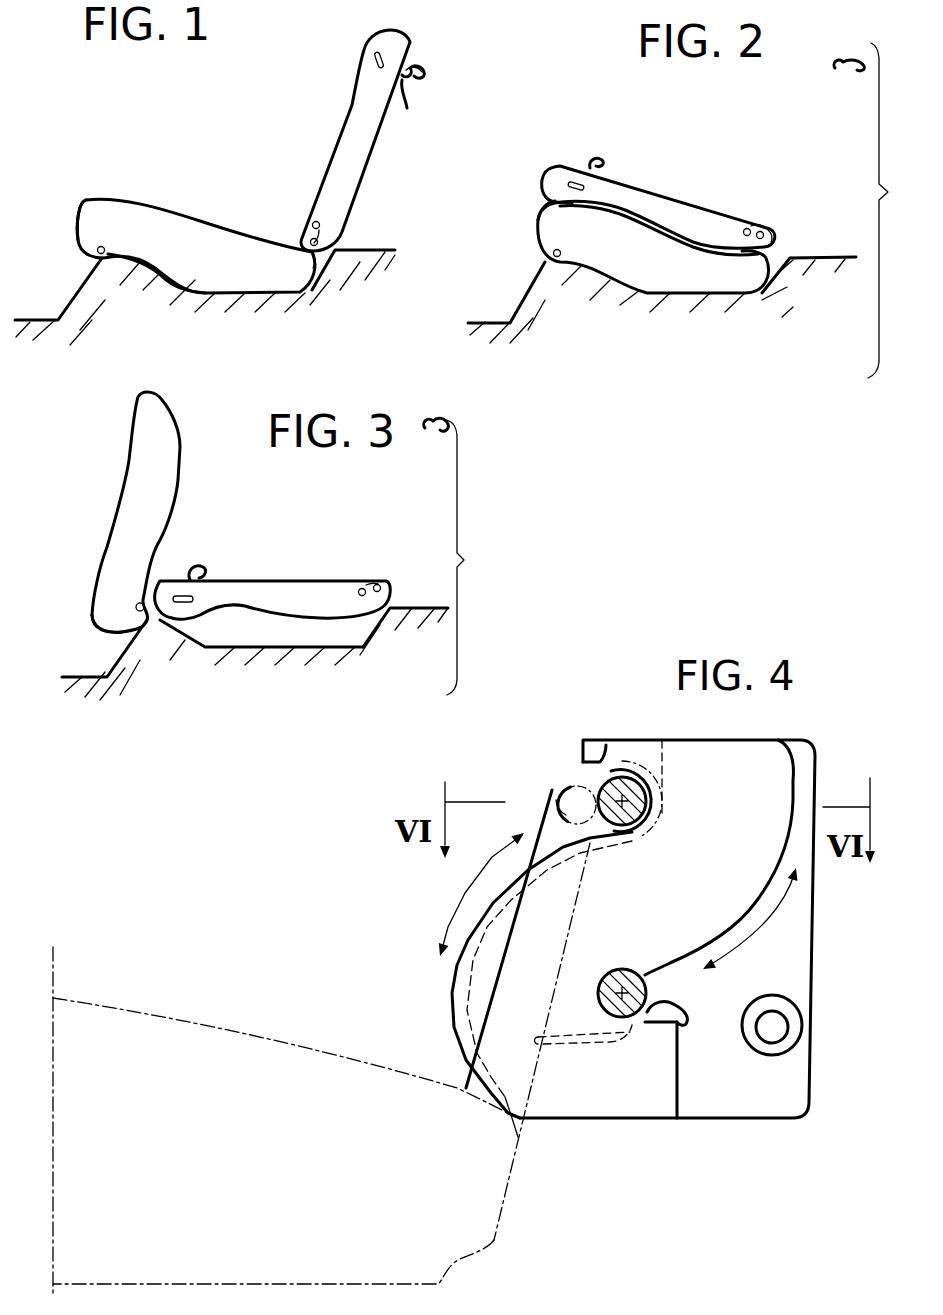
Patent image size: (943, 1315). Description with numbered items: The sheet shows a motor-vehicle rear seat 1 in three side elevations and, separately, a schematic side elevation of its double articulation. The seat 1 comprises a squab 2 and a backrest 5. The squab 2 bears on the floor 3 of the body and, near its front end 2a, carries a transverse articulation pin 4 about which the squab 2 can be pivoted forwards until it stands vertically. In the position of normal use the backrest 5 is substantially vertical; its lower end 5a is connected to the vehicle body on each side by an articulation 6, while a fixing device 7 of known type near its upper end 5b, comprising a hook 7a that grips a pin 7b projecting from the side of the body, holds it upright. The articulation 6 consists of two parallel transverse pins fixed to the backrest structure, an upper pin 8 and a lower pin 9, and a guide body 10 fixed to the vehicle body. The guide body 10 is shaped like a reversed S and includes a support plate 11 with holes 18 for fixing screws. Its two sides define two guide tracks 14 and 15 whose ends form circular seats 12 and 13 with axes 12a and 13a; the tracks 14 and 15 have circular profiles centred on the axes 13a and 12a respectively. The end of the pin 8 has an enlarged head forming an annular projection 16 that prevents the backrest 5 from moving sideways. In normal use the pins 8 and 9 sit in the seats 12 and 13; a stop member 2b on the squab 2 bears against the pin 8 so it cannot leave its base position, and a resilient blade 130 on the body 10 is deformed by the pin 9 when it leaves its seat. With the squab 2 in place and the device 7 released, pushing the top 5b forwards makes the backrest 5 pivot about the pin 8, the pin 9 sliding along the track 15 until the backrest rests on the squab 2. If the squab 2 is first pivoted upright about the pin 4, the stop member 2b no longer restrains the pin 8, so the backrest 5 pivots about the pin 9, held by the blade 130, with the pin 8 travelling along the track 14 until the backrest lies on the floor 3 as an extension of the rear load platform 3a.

In FIG. 1, the rear seat 1 is at (290, 136).
In FIG. 1, the squab 2 is at (248, 277).
In FIG. 2, the squab 2 is at (720, 280).
In FIG. 3, the squab 2 is at (140, 442).
In FIG. 4, the squab 2 is at (205, 1020).
In FIG. 1, the front end of squab 2a is at (103, 210).
In FIG. 2, the front end of squab 2a is at (548, 230).
In FIG. 3, the front end of squab 2a is at (110, 617).
In FIG. 4, the stop member 2b is at (585, 898).
In FIG. 1, the floor 3 is at (100, 277).
In FIG. 2, the floor 3 is at (603, 283).
In FIG. 3, the floor 3 is at (207, 657).
In FIG. 1, the rear load platform 3a is at (372, 258).
In FIG. 2, the rear load platform 3a is at (830, 263).
In FIG. 3, the rear load platform 3a is at (412, 627).
In FIG. 1, the transverse articulation pin 4 is at (108, 250).
In FIG. 2, the transverse articulation pin 4 is at (543, 252).
In FIG. 3, the transverse articulation pin 4 is at (136, 605).
In FIG. 1, the backrest 5 is at (350, 108).
In FIG. 2, the backrest 5 is at (690, 207).
In FIG. 3, the backrest 5 is at (288, 590).
In FIG. 1, the lower end of backrest 5a is at (310, 226).
In FIG. 2, the lower end of backrest 5a is at (738, 230).
In FIG. 3, the lower end of backrest 5a is at (358, 590).
In FIG. 1, the upper end of backrest 5b is at (380, 33).
In FIG. 2, the upper end of backrest 5b is at (558, 178).
In FIG. 3, the upper end of backrest 5b is at (172, 596).
In FIG. 1, the articulation 6 is at (318, 272).
In FIG. 2, the articulation 6 is at (783, 222).
In FIG. 4, the articulation 6 is at (536, 798).
In FIG. 1, the fixing device 7 is at (412, 32).
In FIG. 1, the hook 7a is at (402, 92).
In FIG. 2, the hook 7a is at (603, 160).
In FIG. 3, the hook 7a is at (200, 568).
In FIG. 1, the pin 7b is at (422, 76).
In FIG. 2, the pin 7b is at (856, 76).
In FIG. 3, the pin 7b is at (437, 435).
In FIG. 1, the upper pin 8 is at (319, 221).
In FIG. 2, the upper pin 8 is at (752, 230).
In FIG. 3, the upper pin 8 is at (364, 588).
In FIG. 4, the upper pin 8 is at (590, 800).
In FIG. 1, the lower pin 9 is at (321, 243).
In FIG. 2, the lower pin 9 is at (773, 237).
In FIG. 3, the lower pin 9 is at (380, 586).
In FIG. 4, the lower pin 9 is at (603, 1020).
In FIG. 4, the guide body 10 is at (583, 980).
In FIG. 4, the support plate 11 is at (800, 955).
In FIG. 4, the circular seat 12 is at (660, 783).
In FIG. 4, the axis of seat 12 12a is at (625, 830).
In FIG. 4, the circular seat 13 is at (648, 972).
In FIG. 4, the axis of seat 13 13a is at (650, 1022).
In FIG. 4, the guide track 14 is at (450, 958).
In FIG. 4, the guide track 15 is at (792, 755).
In FIG. 4, the annular projection 16 is at (597, 748).
In FIG. 4, the holes 18 is at (777, 1033).
In FIG. 4, the resilient blade 130 is at (692, 1010).